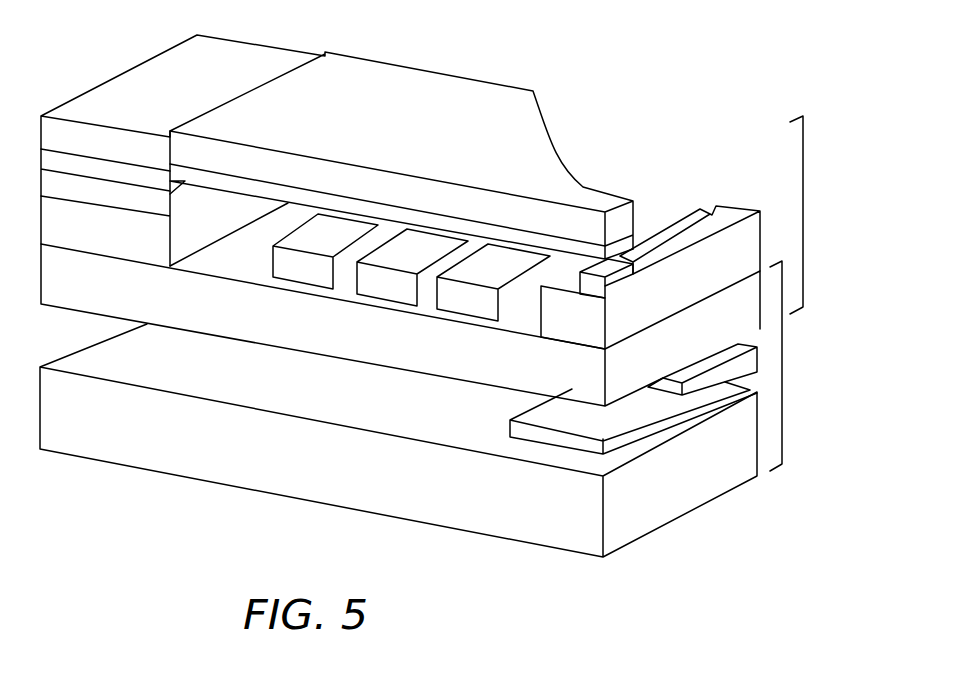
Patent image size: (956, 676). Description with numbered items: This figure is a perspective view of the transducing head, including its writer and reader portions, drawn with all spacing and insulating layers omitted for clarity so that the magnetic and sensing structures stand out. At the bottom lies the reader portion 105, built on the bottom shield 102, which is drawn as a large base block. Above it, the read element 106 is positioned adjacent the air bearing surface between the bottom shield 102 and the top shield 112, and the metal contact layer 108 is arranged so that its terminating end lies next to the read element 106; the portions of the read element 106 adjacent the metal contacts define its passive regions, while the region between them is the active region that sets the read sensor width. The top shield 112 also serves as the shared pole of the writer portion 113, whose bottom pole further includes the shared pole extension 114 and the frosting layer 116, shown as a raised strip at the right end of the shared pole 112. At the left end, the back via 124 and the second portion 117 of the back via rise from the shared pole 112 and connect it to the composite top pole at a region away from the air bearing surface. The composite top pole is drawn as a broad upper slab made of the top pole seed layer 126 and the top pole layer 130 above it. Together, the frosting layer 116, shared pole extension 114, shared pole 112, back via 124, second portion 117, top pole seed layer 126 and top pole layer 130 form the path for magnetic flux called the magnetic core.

The bottom shield 102 is at (269, 480).
The reader portion 105 is at (783, 365).
The read element 106 is at (727, 387).
The metal contact layer 108 is at (745, 362).
The top shield (shared pole) 112 is at (265, 337).
The writer portion 113 is at (803, 205).
The shared pole extension 114 is at (552, 334).
The frosting layer 116 is at (622, 277).
The second portion of the back via 117 is at (78, 190).
The back via 124 is at (72, 247).
The top pole seed layer 126 is at (614, 247).
The top pole layer 130 is at (267, 182).